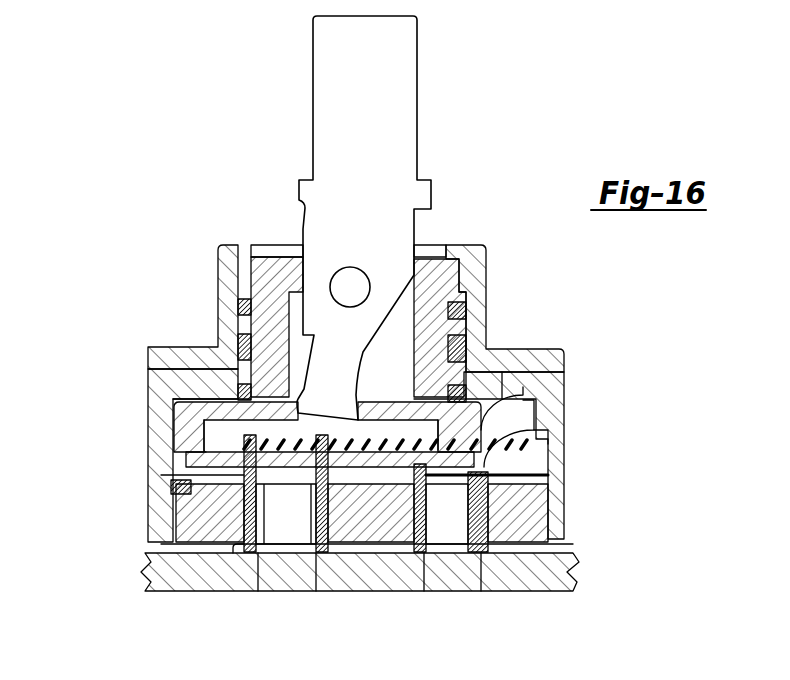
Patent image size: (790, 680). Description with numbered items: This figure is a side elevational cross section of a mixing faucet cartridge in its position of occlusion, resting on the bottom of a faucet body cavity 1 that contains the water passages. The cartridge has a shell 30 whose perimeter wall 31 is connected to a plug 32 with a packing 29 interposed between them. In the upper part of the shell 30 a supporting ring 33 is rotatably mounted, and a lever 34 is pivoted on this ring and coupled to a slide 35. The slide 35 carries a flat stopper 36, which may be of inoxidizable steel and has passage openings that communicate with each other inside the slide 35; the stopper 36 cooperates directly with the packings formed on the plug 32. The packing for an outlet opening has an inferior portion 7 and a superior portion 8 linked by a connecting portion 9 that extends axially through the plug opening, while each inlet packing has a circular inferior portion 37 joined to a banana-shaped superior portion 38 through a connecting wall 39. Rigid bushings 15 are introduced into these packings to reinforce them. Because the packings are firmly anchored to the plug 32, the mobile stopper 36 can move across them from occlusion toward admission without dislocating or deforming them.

The bottom of a faucet body cavity 1 is at (540, 573).
The inferior portion 7 is at (243, 546).
The superior portion 8 is at (287, 490).
The connecting portion 9 is at (343, 510).
The rigid bushing 15 is at (270, 475).
The packing 29 is at (183, 488).
The shell 30 is at (473, 270).
The perimeter wall 31 is at (553, 465).
The plug 32 is at (523, 523).
The supporting ring 33 is at (250, 292).
The lever 34 is at (340, 115).
The slide 35 is at (520, 393).
The flat stopper 36 is at (533, 432).
The inferior portion 37 is at (413, 543).
The superior portion 38 is at (437, 520).
The connecting wall 39 is at (463, 535).